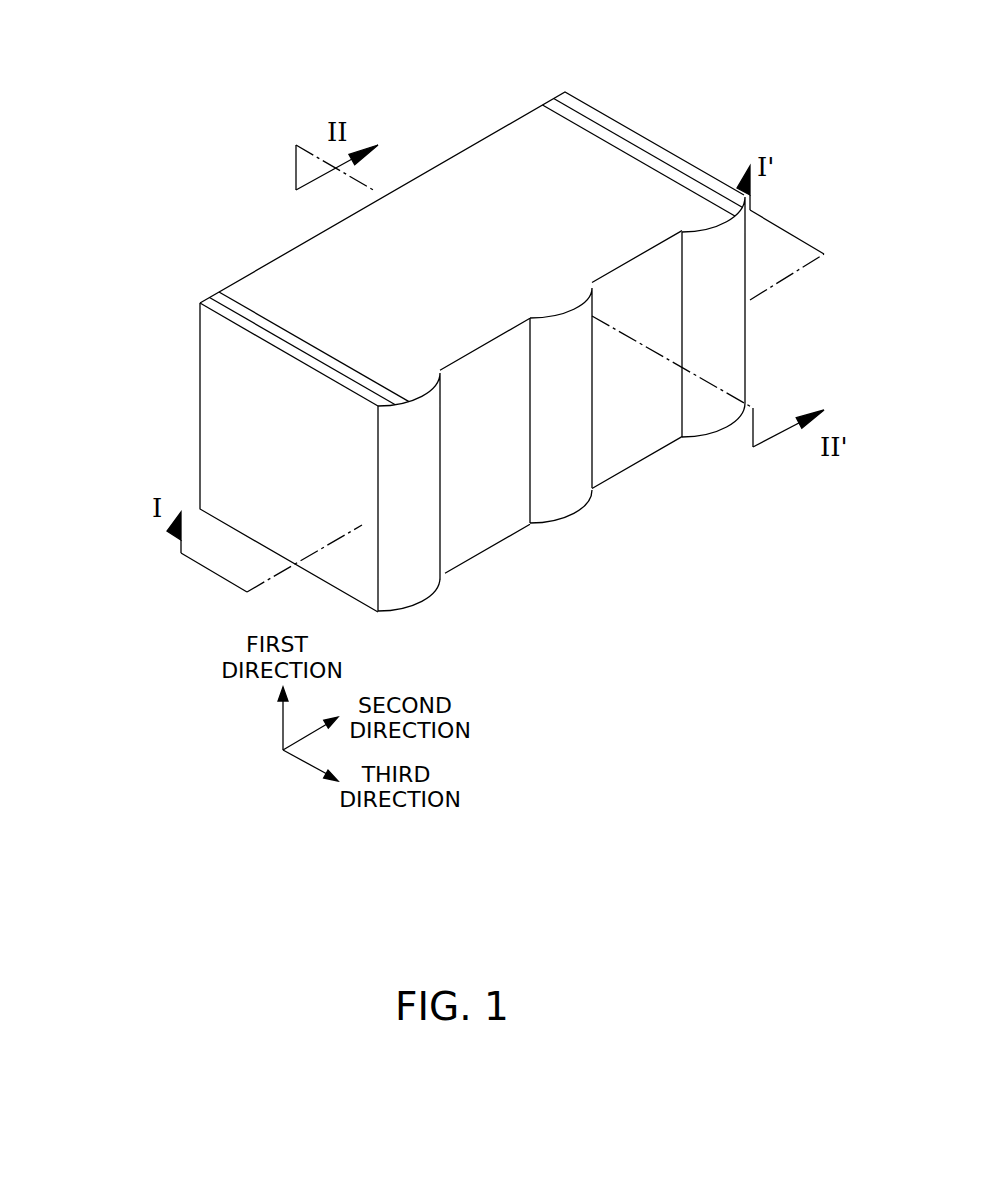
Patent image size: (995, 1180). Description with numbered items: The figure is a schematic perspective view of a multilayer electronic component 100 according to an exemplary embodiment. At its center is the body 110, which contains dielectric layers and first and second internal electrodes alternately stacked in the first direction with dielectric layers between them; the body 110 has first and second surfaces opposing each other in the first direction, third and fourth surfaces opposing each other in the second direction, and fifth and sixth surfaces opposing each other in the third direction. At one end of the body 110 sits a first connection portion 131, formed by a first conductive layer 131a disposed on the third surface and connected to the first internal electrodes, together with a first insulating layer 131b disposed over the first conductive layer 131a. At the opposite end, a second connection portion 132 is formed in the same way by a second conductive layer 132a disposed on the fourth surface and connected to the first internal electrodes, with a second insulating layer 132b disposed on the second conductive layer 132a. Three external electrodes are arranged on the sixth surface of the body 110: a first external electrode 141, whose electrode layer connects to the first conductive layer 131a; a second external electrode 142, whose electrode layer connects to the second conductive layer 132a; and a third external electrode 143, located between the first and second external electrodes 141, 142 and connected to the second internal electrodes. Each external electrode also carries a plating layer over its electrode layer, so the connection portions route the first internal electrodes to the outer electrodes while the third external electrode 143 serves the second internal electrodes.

The multilayer electronic component 100 is at (252, 41).
The body 110 is at (463, 167).
The first connection portion 131 is at (229, 334).
The first conductive layer 131a is at (217, 293).
The first insulating layer 131b is at (210, 350).
The second connection portion 132 is at (670, 133).
The second conductive layer 132a is at (600, 127).
The second insulating layer 132b is at (657, 151).
The first external electrode 141 is at (427, 594).
The second external electrode 142 is at (712, 426).
The third external electrode 143 is at (565, 508).